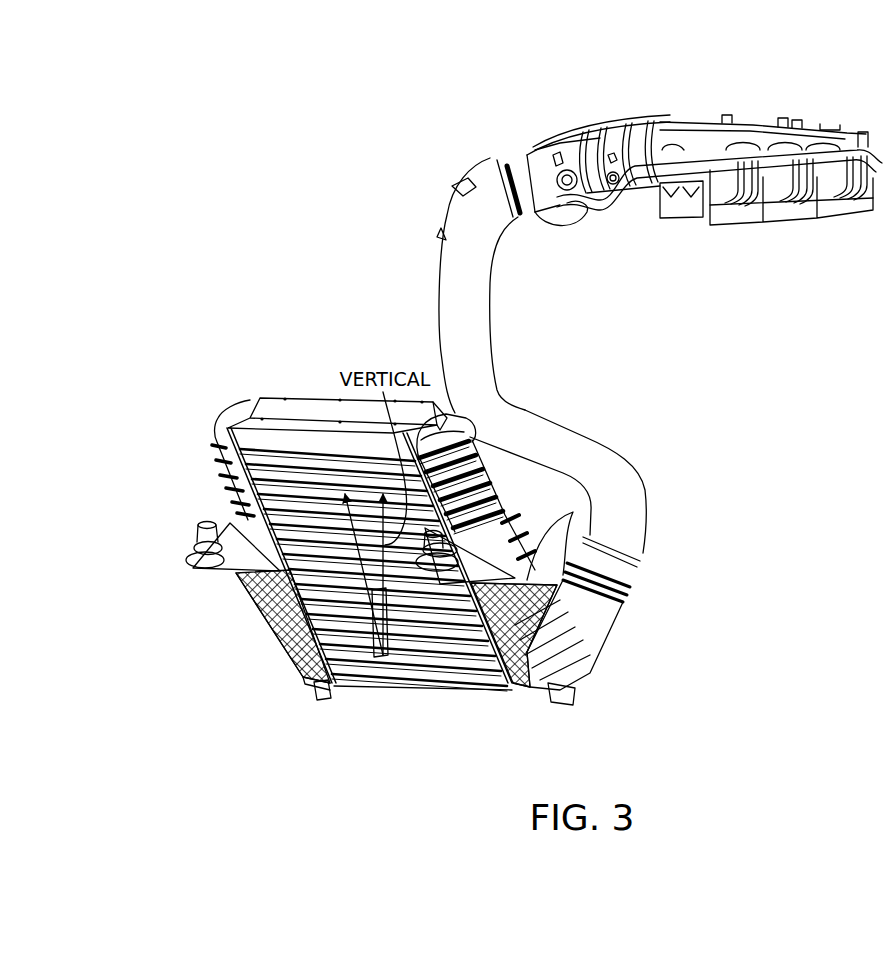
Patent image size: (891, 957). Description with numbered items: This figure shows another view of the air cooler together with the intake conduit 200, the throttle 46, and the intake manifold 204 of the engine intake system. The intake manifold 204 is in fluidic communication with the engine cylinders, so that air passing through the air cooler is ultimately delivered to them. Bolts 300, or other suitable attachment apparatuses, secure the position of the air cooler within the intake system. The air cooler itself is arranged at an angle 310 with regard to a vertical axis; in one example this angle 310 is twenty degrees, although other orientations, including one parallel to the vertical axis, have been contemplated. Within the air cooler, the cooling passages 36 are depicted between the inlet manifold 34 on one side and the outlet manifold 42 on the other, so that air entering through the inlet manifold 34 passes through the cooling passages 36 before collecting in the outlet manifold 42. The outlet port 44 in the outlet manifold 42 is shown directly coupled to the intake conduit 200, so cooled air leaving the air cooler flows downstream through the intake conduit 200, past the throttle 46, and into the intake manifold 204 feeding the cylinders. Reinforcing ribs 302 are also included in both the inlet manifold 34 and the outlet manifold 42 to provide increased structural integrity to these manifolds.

The cooling passages 36 is at (288, 442).
The reinforcing ribs 302 is at (214, 438).
The bolts 300 is at (205, 527).
The inlet manifold 34 is at (265, 607).
The angle 310 is at (387, 582).
The outlet manifold 42 is at (447, 428).
The outlet port 44 is at (566, 620).
The intake conduit 200 is at (553, 437).
The throttle 46 is at (562, 160).
The intake manifold 204 is at (647, 114).